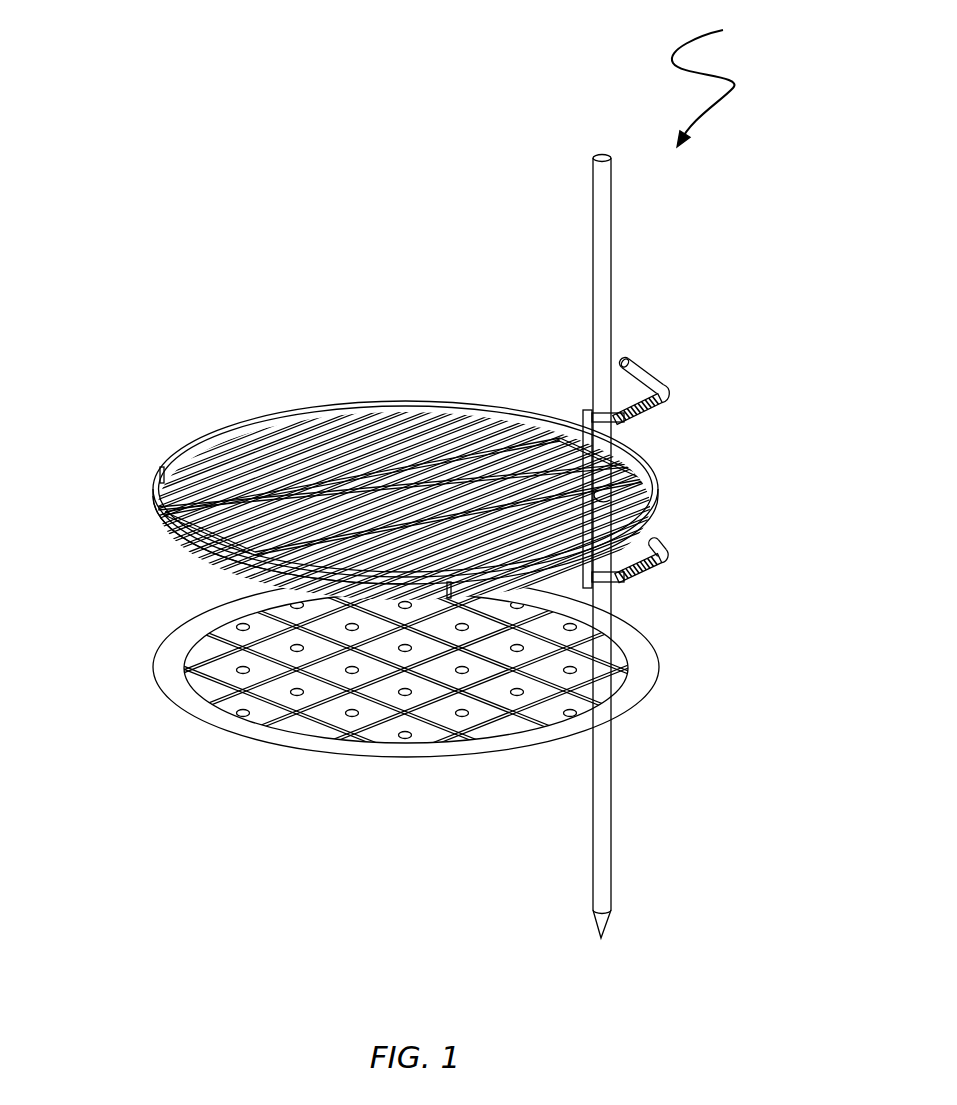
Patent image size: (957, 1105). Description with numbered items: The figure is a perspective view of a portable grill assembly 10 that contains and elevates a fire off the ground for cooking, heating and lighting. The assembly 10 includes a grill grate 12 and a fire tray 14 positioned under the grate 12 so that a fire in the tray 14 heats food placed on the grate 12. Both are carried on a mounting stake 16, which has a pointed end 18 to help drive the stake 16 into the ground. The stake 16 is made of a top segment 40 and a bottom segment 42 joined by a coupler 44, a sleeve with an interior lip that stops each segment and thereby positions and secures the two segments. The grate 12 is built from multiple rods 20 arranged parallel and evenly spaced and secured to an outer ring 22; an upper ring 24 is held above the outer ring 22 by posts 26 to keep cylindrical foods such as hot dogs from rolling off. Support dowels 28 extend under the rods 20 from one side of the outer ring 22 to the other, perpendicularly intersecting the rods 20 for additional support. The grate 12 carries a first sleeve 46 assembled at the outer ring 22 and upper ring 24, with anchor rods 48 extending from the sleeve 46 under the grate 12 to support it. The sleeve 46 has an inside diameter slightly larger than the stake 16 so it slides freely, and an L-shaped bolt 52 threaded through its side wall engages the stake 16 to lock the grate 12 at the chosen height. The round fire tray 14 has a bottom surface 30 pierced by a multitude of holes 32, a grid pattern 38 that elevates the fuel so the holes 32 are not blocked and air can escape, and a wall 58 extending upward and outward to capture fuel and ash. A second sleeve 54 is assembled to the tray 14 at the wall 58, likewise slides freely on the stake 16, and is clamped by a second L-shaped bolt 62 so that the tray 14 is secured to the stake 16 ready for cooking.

The portable grill assembly 10 is at (714, 81).
The grill grate 12 is at (357, 482).
The fire tray 14 is at (351, 671).
The mounting stake 16 is at (681, 547).
The pointed end 18 is at (608, 913).
The rods 20 is at (307, 433).
The outer ring 22 is at (408, 408).
The upper ring 24 is at (232, 418).
The posts 26 is at (365, 410).
The support dowels 28 is at (158, 500).
The bottom surface 30 is at (268, 693).
The holes 32 is at (408, 690).
The grid pattern 38 is at (460, 693).
The top segment 40 is at (602, 240).
The bottom segment 42 is at (602, 752).
The coupler 44 is at (614, 509).
The first sleeve 46 is at (612, 423).
The anchor rods 48 is at (532, 455).
The bolt 52 is at (647, 373).
The second sleeve 54 is at (625, 588).
The wall 58 is at (183, 630).
The bolt 62 is at (668, 568).